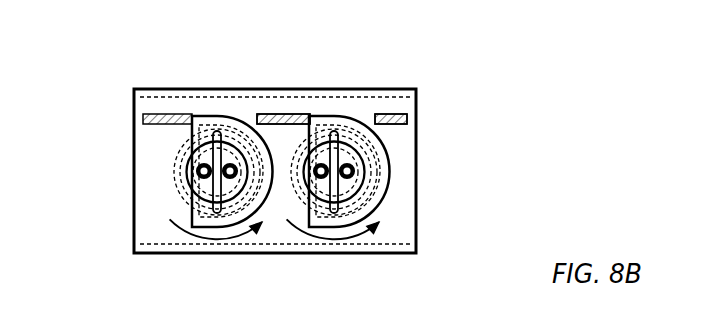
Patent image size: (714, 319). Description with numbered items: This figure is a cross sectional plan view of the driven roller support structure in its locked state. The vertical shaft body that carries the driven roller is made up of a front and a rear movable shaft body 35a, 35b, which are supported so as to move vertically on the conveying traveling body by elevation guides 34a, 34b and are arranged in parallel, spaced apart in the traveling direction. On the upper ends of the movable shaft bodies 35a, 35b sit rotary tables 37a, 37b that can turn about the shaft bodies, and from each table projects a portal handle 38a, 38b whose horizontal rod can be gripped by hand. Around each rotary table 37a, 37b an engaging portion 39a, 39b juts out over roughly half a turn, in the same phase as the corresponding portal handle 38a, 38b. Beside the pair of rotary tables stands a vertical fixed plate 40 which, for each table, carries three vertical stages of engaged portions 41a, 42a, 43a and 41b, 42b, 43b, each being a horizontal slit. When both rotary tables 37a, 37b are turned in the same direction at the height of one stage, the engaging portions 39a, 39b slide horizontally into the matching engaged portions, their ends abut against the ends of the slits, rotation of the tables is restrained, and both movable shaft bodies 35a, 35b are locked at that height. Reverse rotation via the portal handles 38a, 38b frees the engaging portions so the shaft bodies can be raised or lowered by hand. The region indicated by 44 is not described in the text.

The elevation guide 34a is at (175, 153).
The elevation guide 34b is at (386, 195).
The front movable shaft body 35a is at (176, 170).
The rear movable shaft body 35b is at (320, 214).
The rotary table 37a is at (231, 207).
The rotary table 37b is at (345, 207).
The portal handle 38a is at (187, 186).
The portal handle 38b is at (336, 157).
The engaging portion 39a is at (218, 117).
The engaging portion 39b is at (333, 117).
The vertical fixed plate 40 is at (407, 121).
The engaged portion 41a is at (274, 72).
The engaged portion 42a is at (274, 72).
The engaged portion 43a is at (251, 115).
The engaged portion 41b is at (438, 72).
The engaged portion 42b is at (438, 72).
The engaged portion 43b is at (367, 116).
The housing unit 44 is at (412, 165).